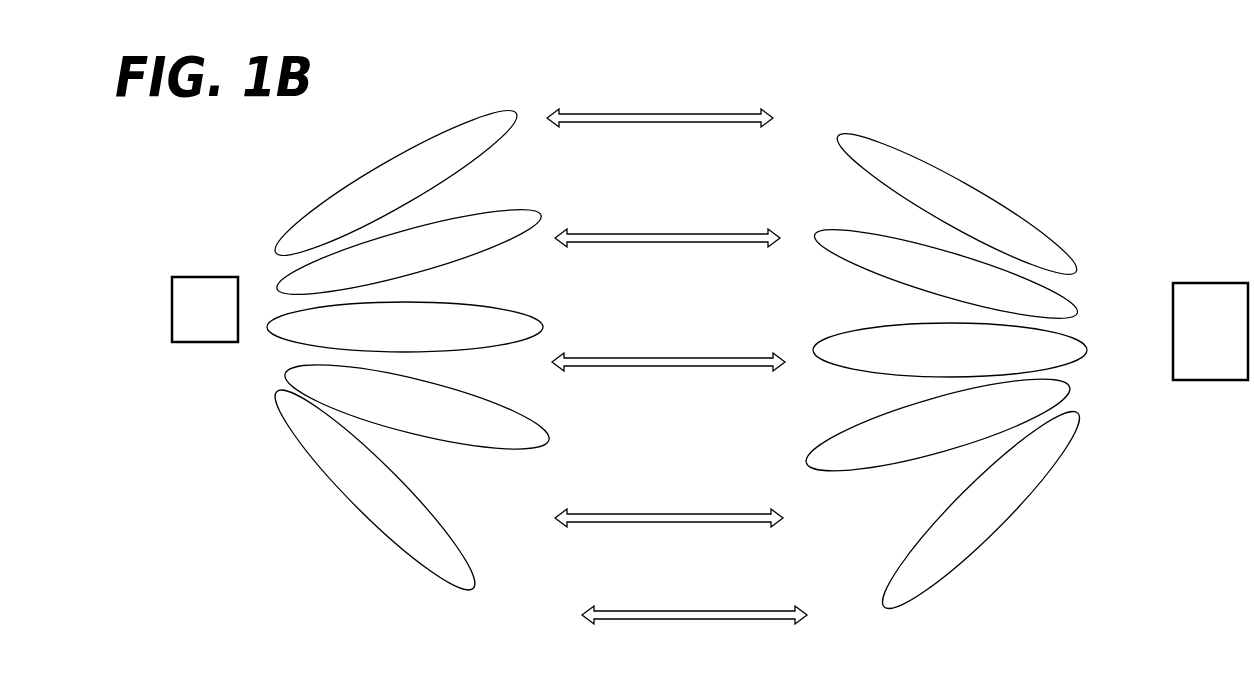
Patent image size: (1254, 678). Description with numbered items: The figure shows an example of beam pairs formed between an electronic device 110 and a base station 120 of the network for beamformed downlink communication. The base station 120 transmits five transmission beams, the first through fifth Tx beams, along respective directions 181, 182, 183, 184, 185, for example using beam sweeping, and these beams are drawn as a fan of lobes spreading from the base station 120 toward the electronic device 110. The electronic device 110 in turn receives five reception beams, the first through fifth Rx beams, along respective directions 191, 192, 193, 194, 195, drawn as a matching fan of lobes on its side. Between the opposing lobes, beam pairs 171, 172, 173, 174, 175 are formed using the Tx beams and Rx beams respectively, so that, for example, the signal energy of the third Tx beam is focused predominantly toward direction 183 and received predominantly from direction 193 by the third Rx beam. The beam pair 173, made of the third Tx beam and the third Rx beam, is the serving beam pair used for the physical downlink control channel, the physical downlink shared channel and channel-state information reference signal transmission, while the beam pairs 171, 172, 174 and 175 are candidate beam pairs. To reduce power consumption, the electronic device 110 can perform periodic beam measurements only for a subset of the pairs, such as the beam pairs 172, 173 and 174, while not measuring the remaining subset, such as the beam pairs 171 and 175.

The electronic device 110 is at (205, 309).
The base station 120 is at (1210, 331).
The beam pair 171 is at (598, 114).
The beam pair 172 is at (605, 236).
The serving beam pair 173 is at (655, 364).
The beam pair 174 is at (715, 521).
The beam pair 175 is at (740, 620).
The direction 181 is at (745, 83).
The direction 182 is at (725, 192).
The direction 183 is at (713, 343).
The direction 184 is at (735, 485).
The direction 185 is at (880, 610).
The direction 191 is at (527, 108).
The direction 192 is at (557, 207).
The direction 193 is at (555, 323).
The direction 194 is at (557, 458).
The direction 195 is at (485, 600).